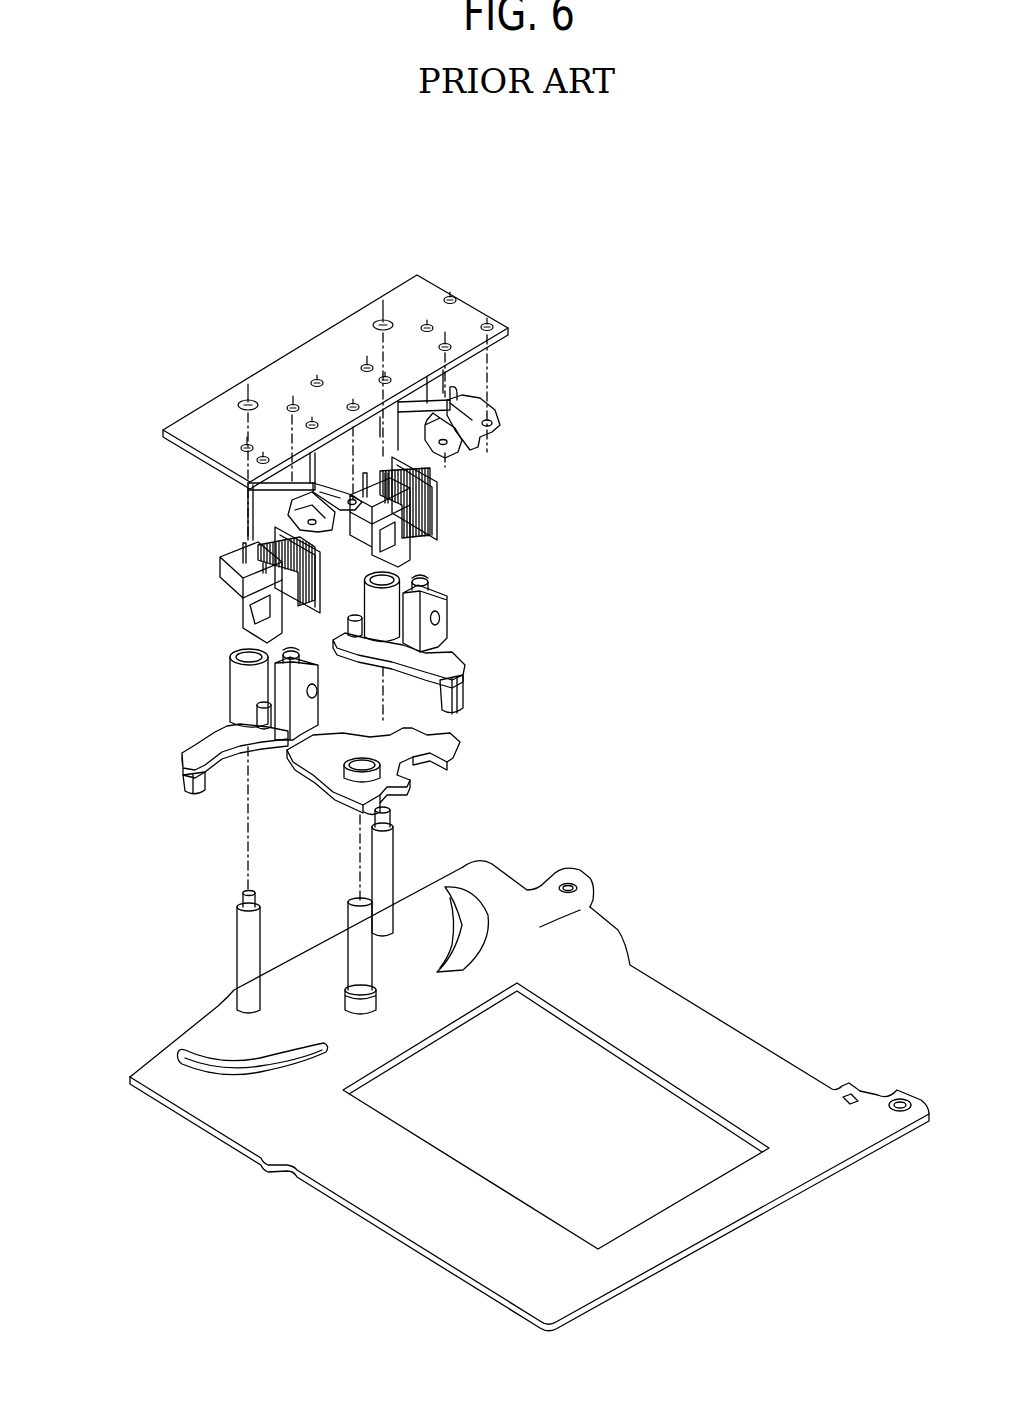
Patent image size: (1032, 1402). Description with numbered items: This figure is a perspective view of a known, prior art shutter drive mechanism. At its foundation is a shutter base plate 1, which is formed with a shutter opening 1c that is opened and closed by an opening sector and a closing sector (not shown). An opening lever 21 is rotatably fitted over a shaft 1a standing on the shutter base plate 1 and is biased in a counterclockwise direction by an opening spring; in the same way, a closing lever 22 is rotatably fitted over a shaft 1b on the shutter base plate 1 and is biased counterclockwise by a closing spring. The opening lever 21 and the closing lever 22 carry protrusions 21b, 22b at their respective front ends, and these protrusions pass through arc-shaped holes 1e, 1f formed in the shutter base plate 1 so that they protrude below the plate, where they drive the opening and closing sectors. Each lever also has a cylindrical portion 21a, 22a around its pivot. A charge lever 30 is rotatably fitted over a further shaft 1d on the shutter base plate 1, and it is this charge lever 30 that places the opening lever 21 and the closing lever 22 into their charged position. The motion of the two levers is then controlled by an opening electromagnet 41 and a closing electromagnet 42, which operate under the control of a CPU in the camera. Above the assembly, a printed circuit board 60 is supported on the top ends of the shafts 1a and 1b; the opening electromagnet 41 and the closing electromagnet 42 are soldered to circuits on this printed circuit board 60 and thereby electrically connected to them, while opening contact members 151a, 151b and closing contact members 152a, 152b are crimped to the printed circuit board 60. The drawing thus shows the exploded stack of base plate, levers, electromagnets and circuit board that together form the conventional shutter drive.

The shutter base plate 1 is at (613, 992).
The shaft 1a is at (380, 865).
The shaft 1b is at (247, 973).
The shutter opening 1c is at (698, 1021).
The shaft 1d is at (593, 908).
The arc-shaped hole 1e is at (488, 952).
The arc-shaped hole 1f is at (261, 1082).
The opening lever 21 is at (443, 653).
The cylindrical boss 21a is at (430, 580).
The protrusion 21b is at (460, 697).
The closing lever 22 is at (227, 723).
The cylindrical boss 22a is at (232, 665).
The protrusion 22b is at (190, 778).
The charge lever 30 is at (415, 745).
The opening electromagnet 41 is at (440, 521).
The closing electromagnet 42 is at (220, 562).
The opening contact member 151a is at (455, 452).
The opening contact member 151b is at (488, 409).
The closing contact member 152a is at (330, 493).
The closing contact member 152b is at (292, 502).
The printed circuit board 60 is at (476, 313).